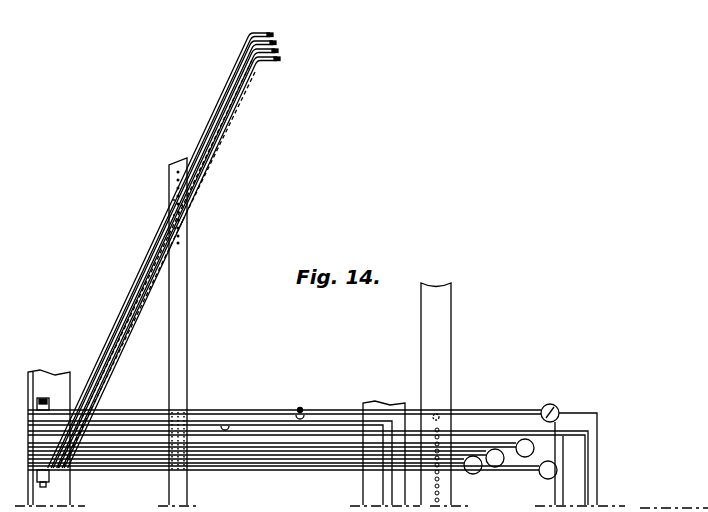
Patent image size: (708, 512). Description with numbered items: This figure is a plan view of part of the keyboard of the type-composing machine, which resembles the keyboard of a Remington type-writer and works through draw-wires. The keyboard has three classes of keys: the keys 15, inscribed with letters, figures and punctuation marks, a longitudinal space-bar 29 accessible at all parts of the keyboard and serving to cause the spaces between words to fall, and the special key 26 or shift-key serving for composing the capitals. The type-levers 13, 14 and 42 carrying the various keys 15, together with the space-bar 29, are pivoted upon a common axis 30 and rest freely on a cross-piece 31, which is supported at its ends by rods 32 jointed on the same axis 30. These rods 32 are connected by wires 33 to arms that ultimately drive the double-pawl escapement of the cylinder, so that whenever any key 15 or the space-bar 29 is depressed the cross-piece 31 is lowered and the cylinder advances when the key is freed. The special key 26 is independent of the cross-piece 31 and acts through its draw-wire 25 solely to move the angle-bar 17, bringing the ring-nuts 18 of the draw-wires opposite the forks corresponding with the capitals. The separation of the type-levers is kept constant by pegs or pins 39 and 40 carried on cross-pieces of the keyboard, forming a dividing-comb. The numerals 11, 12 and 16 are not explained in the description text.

The post 11 is at (451, 378).
The strip terminals 12 is at (291, 55).
The type-lever 13 is at (114, 322).
The type-levers 14 is at (312, 456).
The keys 15 is at (525, 448).
The terminal ring 16 is at (548, 470).
The angle-bar 17 is at (495, 458).
The ring-nuts 18 is at (473, 465).
The draw-wire 25 is at (301, 409).
The special key 26 is at (556, 405).
The space-bar 29 is at (583, 455).
The common axis 30 is at (43, 398).
The cross-piece 31 is at (387, 486).
The rods 32 is at (204, 425).
The wires 33 is at (226, 425).
The pegs 39 is at (440, 414).
The pegs 40 is at (179, 243).
The cross-piece 42 is at (184, 271).